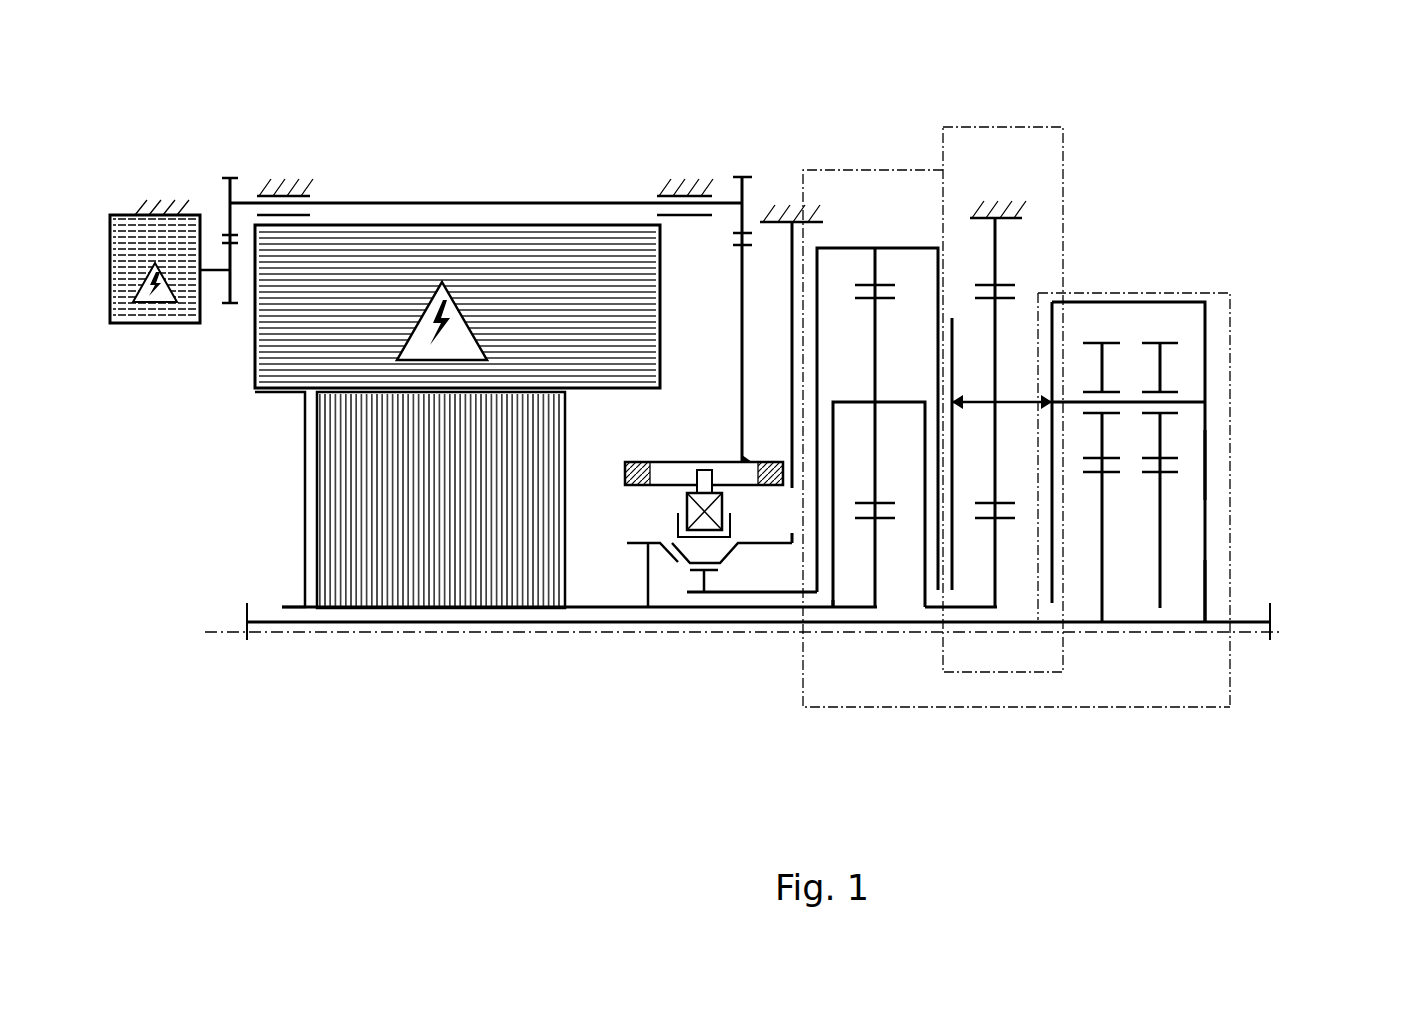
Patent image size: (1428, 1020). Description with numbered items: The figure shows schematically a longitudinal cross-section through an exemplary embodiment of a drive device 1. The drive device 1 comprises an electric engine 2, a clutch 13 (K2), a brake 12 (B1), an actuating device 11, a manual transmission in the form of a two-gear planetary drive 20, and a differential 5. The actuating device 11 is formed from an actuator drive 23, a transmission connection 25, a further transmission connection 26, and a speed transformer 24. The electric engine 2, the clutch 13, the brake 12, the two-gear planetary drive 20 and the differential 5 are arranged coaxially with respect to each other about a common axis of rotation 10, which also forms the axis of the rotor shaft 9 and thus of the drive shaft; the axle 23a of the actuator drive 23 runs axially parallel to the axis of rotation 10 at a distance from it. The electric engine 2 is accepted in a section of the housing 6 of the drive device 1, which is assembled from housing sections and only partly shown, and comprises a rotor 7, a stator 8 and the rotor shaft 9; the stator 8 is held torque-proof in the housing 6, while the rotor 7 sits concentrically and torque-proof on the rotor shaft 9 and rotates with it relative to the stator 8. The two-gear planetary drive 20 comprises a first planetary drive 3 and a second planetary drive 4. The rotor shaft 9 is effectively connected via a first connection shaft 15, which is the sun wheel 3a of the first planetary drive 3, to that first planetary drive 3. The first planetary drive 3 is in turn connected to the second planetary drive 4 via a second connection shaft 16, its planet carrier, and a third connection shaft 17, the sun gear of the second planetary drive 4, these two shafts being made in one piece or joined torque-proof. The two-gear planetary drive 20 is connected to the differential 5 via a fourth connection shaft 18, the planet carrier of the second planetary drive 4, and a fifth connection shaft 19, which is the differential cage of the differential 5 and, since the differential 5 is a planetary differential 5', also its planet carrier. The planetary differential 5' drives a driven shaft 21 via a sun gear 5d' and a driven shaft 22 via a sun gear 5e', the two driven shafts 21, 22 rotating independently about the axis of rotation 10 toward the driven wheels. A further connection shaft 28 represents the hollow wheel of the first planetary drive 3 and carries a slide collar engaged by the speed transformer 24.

The drive device 1 is at (1187, 45).
The electric engine 2 is at (457, 232).
The first planetary drive 3 is at (1016, 363).
The sun wheel 3a is at (877, 511).
The second planetary drive 4 is at (1003, 345).
The differential 5 is at (1157, 449).
The planetary differential 5' is at (1178, 462).
The sun gear 5d' is at (1218, 475).
The sun gear 5e' is at (1248, 546).
The housing 6 is at (683, 120).
The rotor 7 is at (397, 500).
The stator 8 is at (245, 473).
The rotor shaft 9 is at (639, 691).
The axis of rotation 10 is at (700, 613).
The actuating device 11 is at (486, 140).
The brake 12 is at (704, 618).
The clutch 13 is at (613, 659).
The first connection shaft 15 is at (801, 687).
The second connection shaft 16 is at (901, 588).
The third connection shaft 17 is at (1031, 496).
The fourth connection shaft 18 is at (1155, 452).
The fifth connection shaft 19 is at (1307, 465).
The two-gear planetary drive 20 is at (1024, 72).
The driven shaft 21 is at (1130, 559).
The driven shaft 22 is at (1254, 667).
The actuator drive 23 is at (144, 306).
The axle 23a is at (195, 341).
The speed transformer 24 is at (701, 659).
The transmission connection 25 is at (766, 240).
The transmission connection 26 is at (200, 190).
The fifth connection shaft 28 is at (752, 683).
The clutch K2 is at (608, 514).
The brake B1 is at (788, 382).